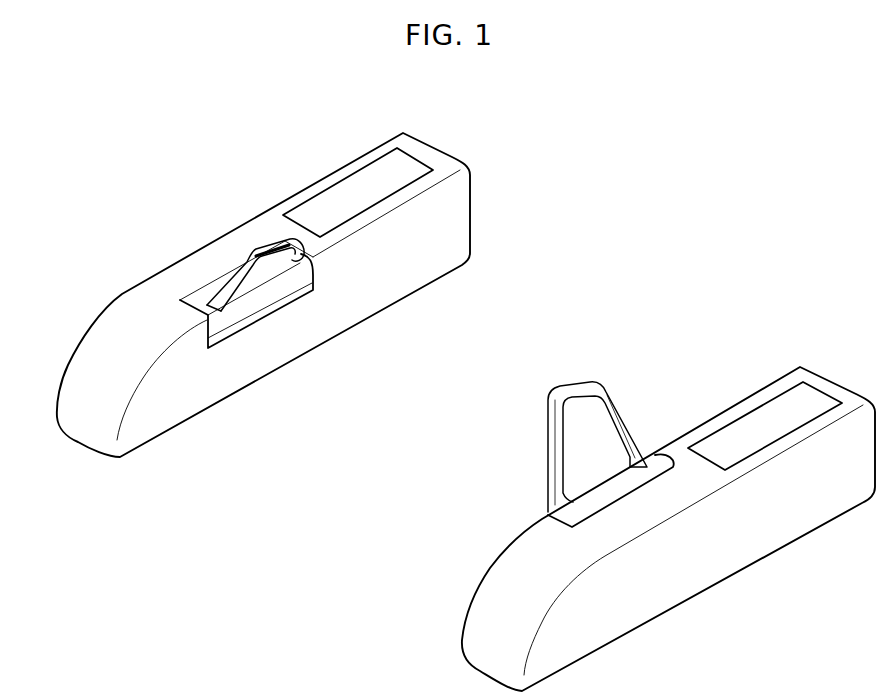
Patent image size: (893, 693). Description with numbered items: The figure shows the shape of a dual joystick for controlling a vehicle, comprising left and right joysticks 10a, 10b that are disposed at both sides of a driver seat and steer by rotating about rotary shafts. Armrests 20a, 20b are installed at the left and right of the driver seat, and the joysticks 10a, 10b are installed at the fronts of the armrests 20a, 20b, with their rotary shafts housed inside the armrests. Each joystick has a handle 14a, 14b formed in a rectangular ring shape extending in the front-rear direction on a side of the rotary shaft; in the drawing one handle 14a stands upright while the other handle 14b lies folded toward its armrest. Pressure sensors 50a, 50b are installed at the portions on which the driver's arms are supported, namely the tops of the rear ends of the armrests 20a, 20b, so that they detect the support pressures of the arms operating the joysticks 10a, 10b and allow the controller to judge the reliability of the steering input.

The left joystick 10a is at (621, 481).
The right joystick 10b is at (245, 274).
The handle 14a is at (600, 385).
The handle 14b is at (258, 248).
The armrest 20a is at (690, 567).
The armrest 20b is at (127, 313).
The pressure sensor 50a is at (770, 417).
The pressure sensor 50b is at (360, 185).